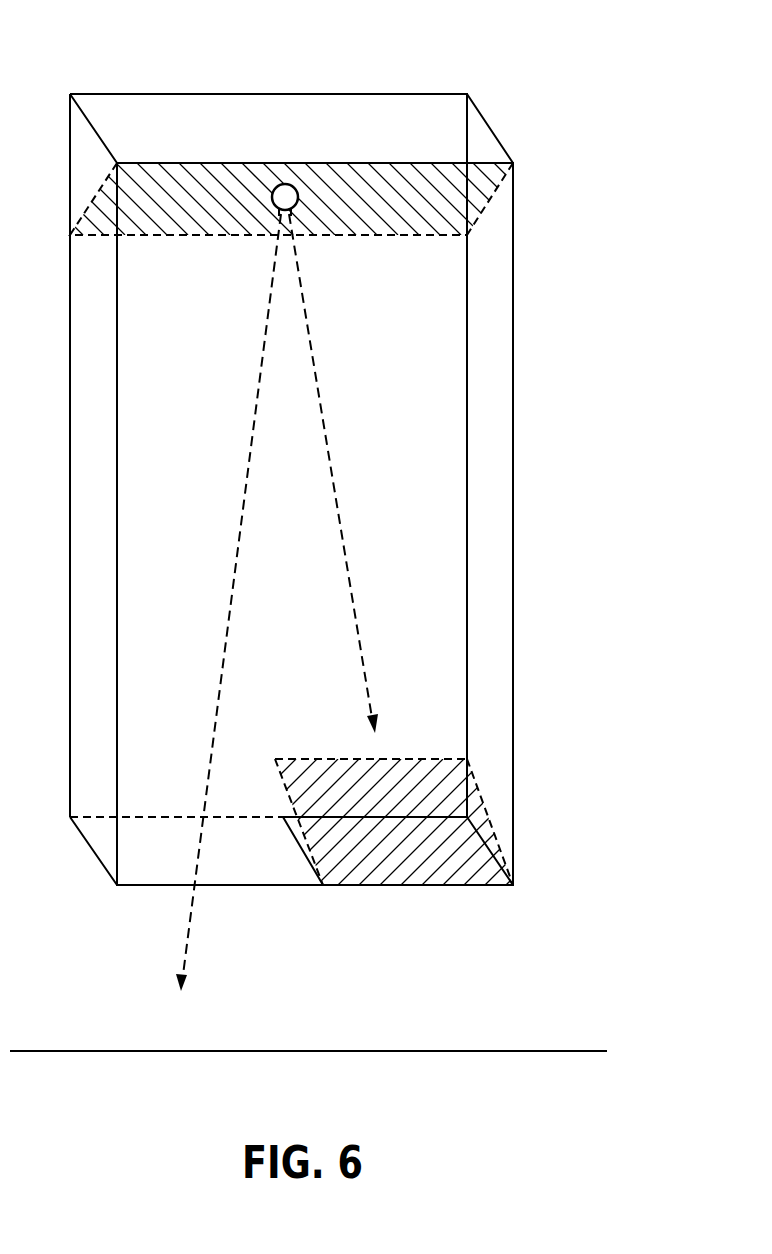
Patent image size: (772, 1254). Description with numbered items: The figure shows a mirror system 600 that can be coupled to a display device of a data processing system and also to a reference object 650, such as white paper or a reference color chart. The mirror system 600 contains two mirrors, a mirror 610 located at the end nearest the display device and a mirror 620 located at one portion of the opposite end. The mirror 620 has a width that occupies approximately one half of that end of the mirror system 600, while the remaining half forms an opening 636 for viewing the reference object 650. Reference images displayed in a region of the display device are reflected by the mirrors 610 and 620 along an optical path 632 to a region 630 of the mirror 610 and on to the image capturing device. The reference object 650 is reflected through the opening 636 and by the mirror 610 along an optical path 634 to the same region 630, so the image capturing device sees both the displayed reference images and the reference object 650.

The mirror system 600 is at (356, 94).
The mirror 610 is at (375, 212).
The mirror 620 is at (413, 787).
The region of mirror 630 is at (285, 192).
The optical path 632 is at (327, 437).
The optical path 634 is at (188, 935).
The opening 636 is at (166, 857).
The surface 650 is at (455, 1050).